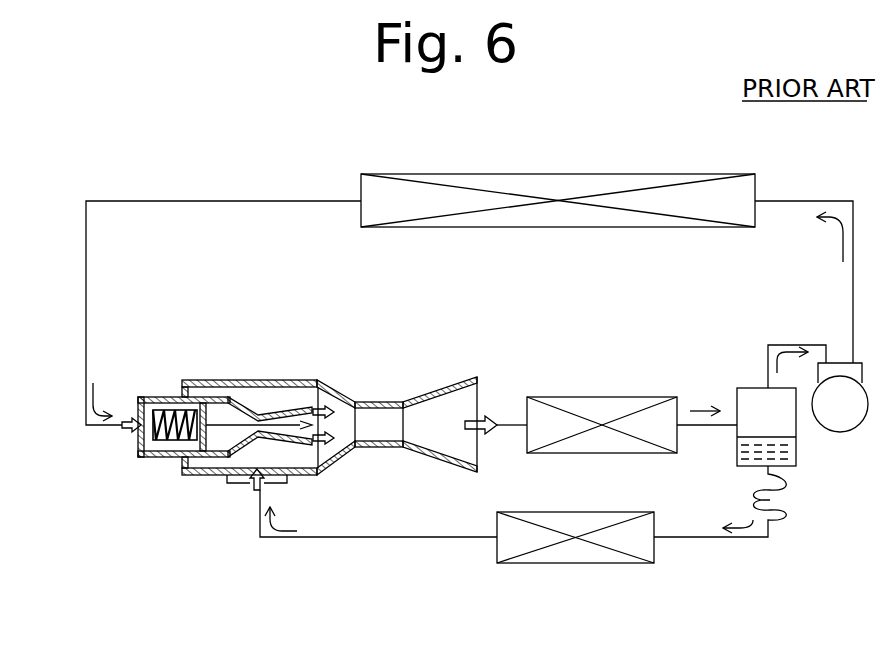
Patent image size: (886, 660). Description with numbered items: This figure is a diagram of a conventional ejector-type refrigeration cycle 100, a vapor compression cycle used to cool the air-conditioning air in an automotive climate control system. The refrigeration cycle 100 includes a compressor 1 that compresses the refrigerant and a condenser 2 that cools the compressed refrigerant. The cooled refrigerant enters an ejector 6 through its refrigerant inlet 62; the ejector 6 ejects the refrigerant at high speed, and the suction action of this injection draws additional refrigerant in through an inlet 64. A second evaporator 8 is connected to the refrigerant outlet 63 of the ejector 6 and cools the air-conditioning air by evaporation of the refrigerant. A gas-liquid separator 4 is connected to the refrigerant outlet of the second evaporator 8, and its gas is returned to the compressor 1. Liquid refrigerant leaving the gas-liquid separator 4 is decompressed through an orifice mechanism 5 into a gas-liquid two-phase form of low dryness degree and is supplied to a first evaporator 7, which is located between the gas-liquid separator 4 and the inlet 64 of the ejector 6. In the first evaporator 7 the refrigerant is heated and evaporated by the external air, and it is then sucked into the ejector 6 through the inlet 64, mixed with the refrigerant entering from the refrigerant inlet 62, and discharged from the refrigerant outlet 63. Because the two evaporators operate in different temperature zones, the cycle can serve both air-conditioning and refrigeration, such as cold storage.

The refrigeration cycle 100 is at (75, 220).
The condenser 2 is at (546, 172).
The ejector 6 is at (180, 473).
The refrigerant inlet 62 is at (139, 419).
The refrigerant outlet 63 is at (478, 419).
The inlet 64 is at (262, 491).
The second evaporator 8 is at (602, 410).
The gas-liquid separator 4 is at (753, 395).
The compressor 1 is at (841, 425).
The orifice mechanism 5 is at (783, 497).
The first evaporator 7 is at (578, 548).